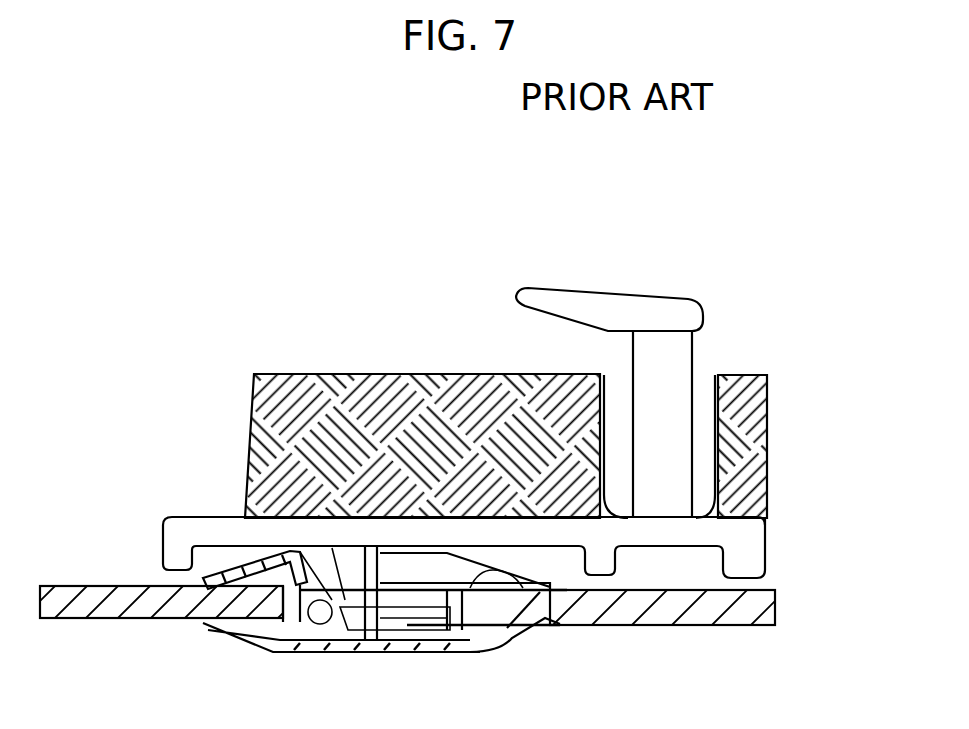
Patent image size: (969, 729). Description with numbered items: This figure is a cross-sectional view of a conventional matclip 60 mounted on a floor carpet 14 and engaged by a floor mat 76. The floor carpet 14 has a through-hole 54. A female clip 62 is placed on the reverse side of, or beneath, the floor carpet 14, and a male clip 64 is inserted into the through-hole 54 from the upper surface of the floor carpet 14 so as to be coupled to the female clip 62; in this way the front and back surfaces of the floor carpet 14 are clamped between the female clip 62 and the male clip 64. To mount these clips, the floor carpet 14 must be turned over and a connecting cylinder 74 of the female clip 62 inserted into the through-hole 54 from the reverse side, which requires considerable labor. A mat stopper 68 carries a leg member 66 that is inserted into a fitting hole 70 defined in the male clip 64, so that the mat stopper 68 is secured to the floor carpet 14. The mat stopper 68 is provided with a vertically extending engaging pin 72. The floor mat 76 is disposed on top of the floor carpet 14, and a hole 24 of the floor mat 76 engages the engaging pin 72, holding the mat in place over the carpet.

The floor mat 76 is at (411, 373).
The hole 24 is at (613, 387).
The engaging pin 72 is at (693, 397).
The matclip 60 is at (790, 508).
The mat stopper 68 is at (768, 537).
The floor carpet 14 is at (738, 627).
The fitting hole 70 is at (313, 630).
The leg member 66 is at (428, 597).
The connecting cylinder 74 is at (502, 598).
The female clip 62 is at (522, 628).
The through-hole 54 is at (523, 588).
The male clip 64 is at (530, 584).